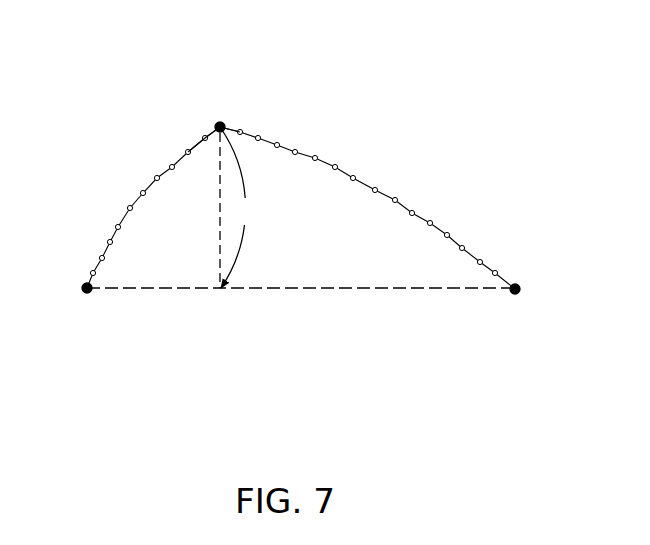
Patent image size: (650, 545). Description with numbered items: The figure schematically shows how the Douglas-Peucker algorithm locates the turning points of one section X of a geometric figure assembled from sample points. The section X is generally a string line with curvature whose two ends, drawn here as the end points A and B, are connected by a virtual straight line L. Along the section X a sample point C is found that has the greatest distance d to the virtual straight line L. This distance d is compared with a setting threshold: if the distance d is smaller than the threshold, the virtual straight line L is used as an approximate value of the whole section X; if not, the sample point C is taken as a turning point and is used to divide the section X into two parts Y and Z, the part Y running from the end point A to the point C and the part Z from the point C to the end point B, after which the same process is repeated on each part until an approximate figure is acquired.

The section X is at (185, 135).
The first part of section Y is at (130, 188).
The second part of section Z is at (368, 183).
The virtual straight line L is at (331, 294).
The greatest distance d is at (236, 207).
The start point A is at (84, 305).
The end point B is at (518, 305).
The sample point C is at (219, 190).